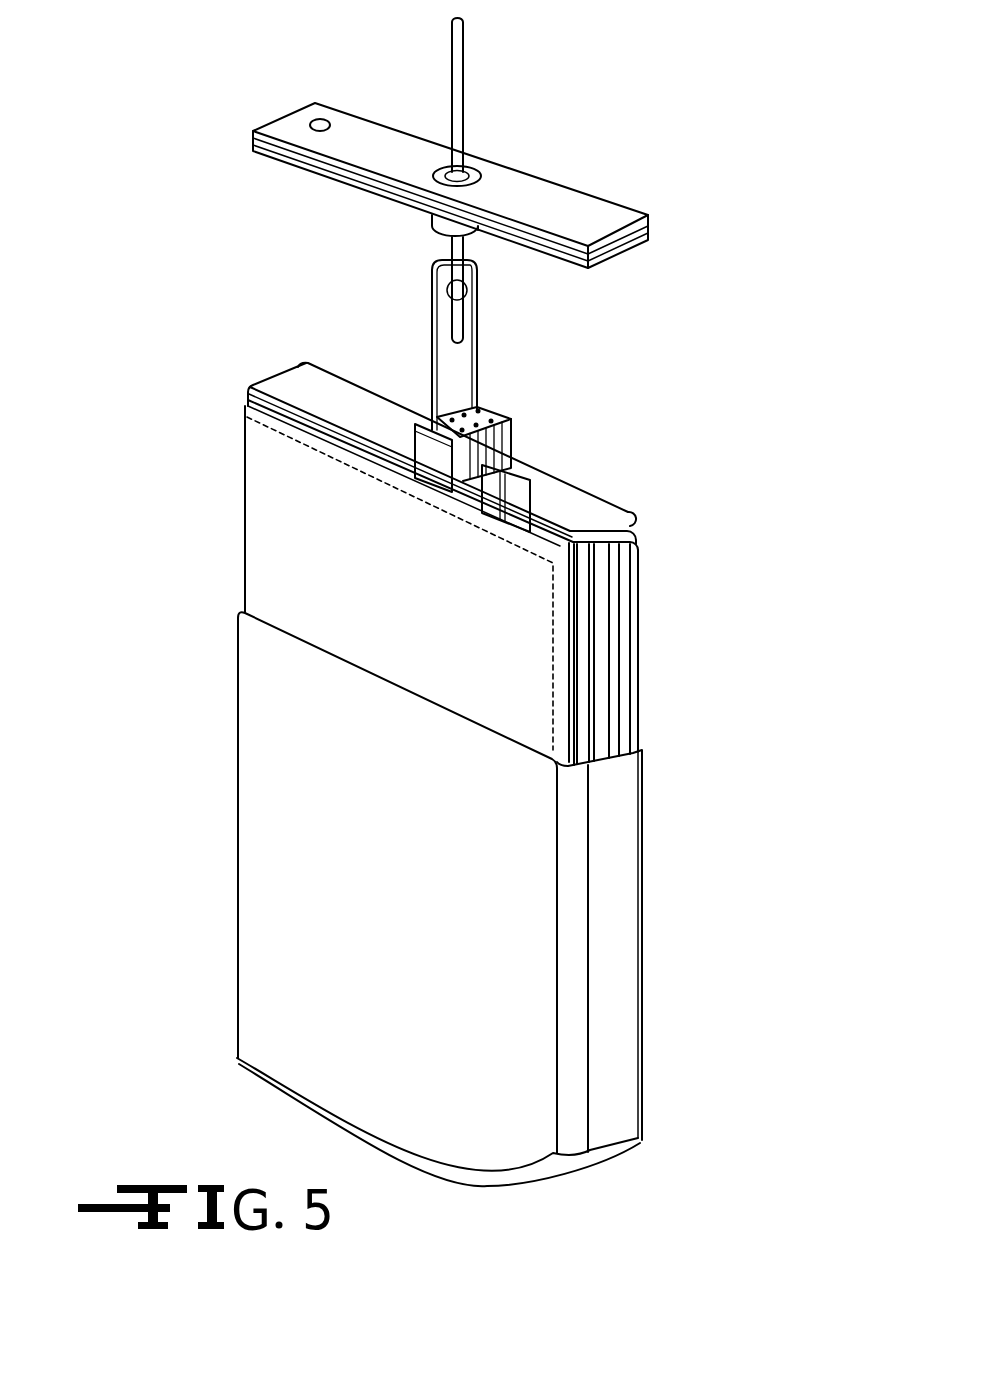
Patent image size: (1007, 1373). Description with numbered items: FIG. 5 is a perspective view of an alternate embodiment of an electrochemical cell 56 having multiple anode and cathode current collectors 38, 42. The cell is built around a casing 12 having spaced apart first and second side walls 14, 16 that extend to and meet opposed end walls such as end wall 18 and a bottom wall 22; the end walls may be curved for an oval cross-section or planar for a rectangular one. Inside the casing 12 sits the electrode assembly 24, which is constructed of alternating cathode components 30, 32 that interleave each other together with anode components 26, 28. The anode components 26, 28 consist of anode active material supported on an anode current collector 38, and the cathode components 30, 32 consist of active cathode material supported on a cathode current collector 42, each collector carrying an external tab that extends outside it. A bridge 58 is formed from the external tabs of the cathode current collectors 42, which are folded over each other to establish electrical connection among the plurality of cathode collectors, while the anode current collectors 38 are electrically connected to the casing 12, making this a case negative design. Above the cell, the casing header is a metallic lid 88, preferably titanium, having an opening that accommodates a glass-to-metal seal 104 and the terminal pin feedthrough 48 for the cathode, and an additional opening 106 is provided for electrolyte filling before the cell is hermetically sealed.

The casing 12 is at (300, 782).
The first side wall 14 is at (320, 895).
The second side wall 16 is at (642, 872).
The end wall 18 is at (617, 960).
The bottom wall 22 is at (430, 1180).
The electrode assembly 24 is at (655, 637).
The anode component 26 is at (635, 548).
The anode component 28 is at (610, 645).
The cathode component 30 is at (592, 680).
The cathode component 32 is at (617, 583).
The anode current collector 38 is at (520, 487).
The cathode current collector 42 is at (515, 425).
The terminal pin feedthrough 48 is at (463, 75).
The electrochemical cell 56 is at (178, 438).
The bridge 58 is at (418, 385).
The lid 88 is at (573, 207).
The glass-to-metal seal 104 is at (493, 172).
The opening 106 is at (321, 118).